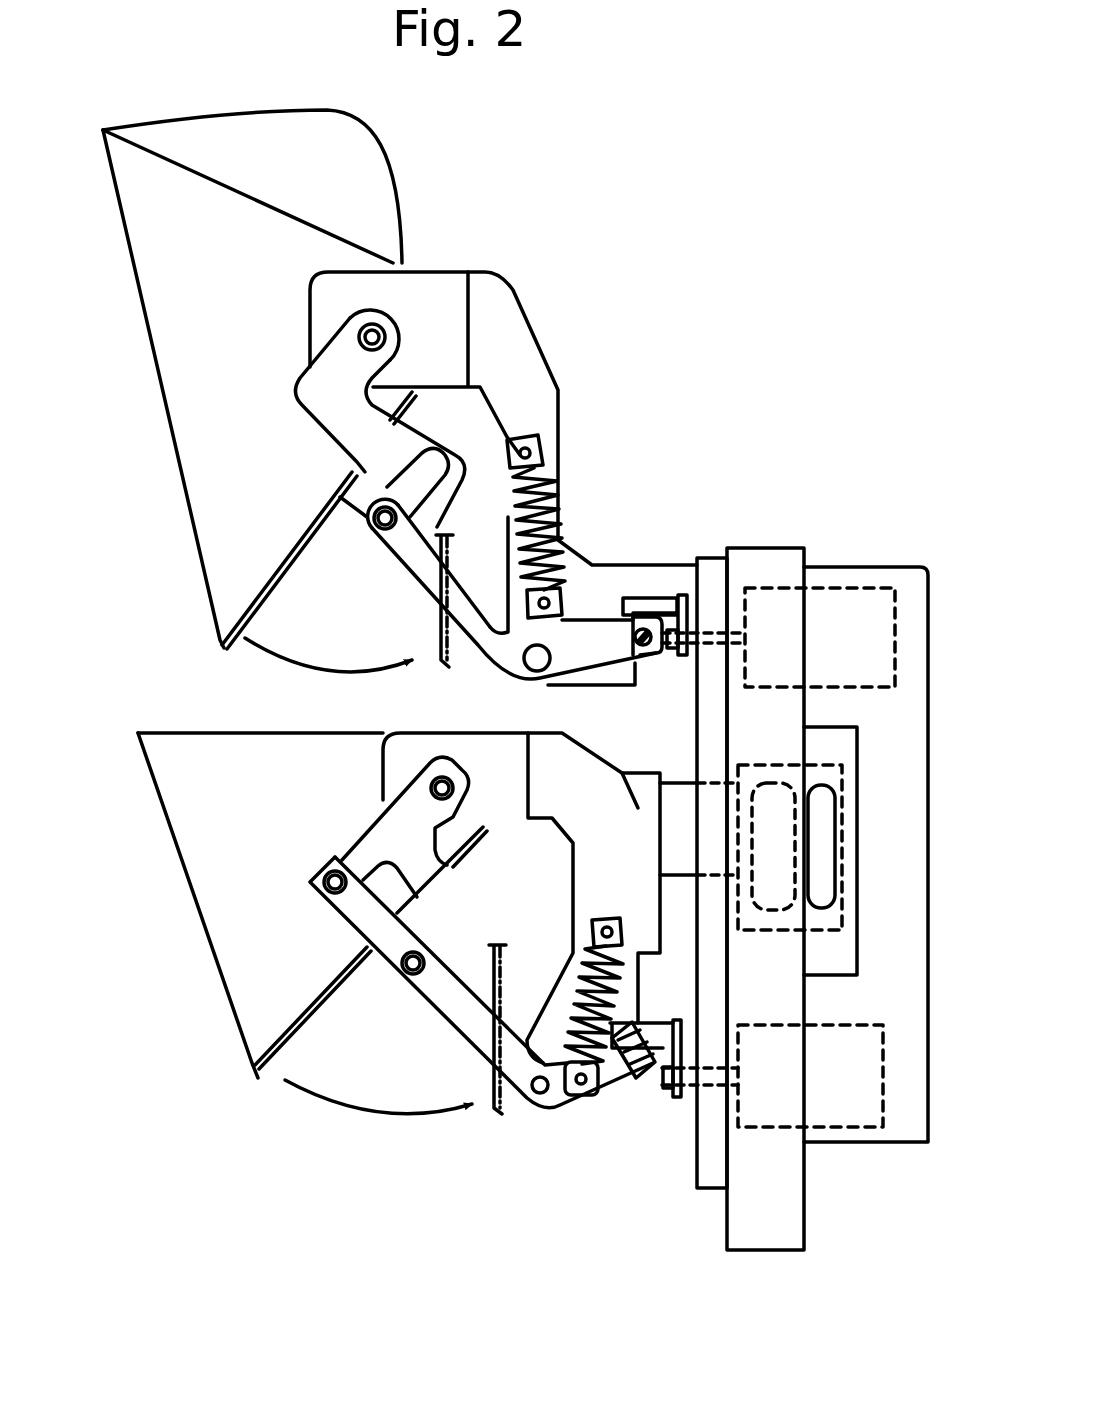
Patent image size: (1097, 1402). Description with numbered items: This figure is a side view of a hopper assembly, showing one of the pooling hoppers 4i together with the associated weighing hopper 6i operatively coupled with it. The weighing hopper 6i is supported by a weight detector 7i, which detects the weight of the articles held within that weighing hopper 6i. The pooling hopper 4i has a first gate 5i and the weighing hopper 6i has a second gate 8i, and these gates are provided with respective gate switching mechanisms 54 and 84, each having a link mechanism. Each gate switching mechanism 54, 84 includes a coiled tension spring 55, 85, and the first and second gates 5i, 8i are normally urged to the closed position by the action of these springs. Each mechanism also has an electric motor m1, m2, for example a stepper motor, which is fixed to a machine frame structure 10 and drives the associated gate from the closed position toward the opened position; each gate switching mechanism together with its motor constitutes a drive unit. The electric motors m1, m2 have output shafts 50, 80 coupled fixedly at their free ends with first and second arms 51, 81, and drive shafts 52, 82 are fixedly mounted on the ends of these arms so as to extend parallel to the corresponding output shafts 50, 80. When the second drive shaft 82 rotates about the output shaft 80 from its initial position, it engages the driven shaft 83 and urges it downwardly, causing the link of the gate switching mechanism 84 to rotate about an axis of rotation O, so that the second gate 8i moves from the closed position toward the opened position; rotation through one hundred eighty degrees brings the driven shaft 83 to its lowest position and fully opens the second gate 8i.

The pooling hopper 4i is at (172, 342).
The first gate 5i is at (323, 612).
The weighing hopper 6i is at (218, 884).
The weight detector 7i is at (830, 778).
The second gate 8i is at (300, 1020).
The machine frame structure 10 is at (707, 1190).
The output shaft 50 is at (690, 660).
The first arm 51 is at (682, 592).
The drive shaft 52 is at (645, 598).
The gate switching mechanism 54 is at (492, 688).
The coiled tension spring 55 is at (537, 510).
The output shaft 80 is at (690, 1095).
The second arm 81 is at (681, 1027).
The drive shaft 82 is at (658, 1035).
The driven shaft 83 is at (622, 1090).
The gate switching mechanism 84 is at (547, 1120).
The coiled tension spring 85 is at (582, 975).
The electric motor m1 is at (865, 590).
The electric motor m2 is at (828, 1130).
The axis of rotation O is at (537, 660).